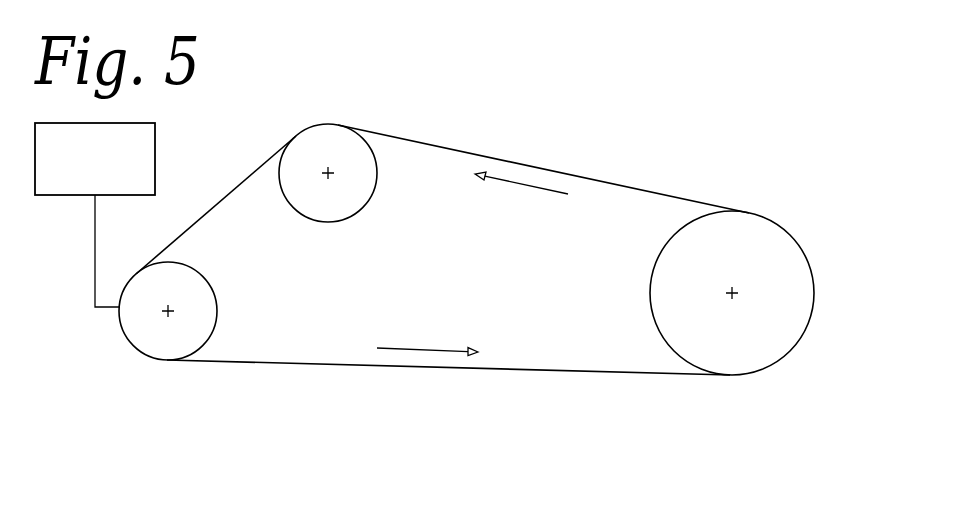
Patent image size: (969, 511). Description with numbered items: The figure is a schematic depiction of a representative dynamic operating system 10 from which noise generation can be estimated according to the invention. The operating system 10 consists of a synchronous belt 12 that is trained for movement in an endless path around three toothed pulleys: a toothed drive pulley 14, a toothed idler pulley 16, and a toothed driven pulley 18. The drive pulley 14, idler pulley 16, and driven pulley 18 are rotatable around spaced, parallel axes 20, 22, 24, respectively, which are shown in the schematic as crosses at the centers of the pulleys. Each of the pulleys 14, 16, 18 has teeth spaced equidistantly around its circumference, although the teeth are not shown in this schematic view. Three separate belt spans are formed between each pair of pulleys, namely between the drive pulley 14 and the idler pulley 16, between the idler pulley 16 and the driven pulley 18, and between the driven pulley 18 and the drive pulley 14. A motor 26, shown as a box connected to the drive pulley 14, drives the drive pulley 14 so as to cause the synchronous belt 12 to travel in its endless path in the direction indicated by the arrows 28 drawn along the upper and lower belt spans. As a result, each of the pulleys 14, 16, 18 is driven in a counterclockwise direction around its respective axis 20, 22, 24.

The operating system 10 is at (607, 124).
The synchronous belt 12 is at (467, 152).
The toothed drive pulley 14 is at (187, 275).
The toothed idler pulley 16 is at (367, 187).
The toothed driven pulley 18 is at (725, 352).
The axis 20 is at (168, 311).
The axis 22 is at (328, 173).
The axis 24 is at (732, 293).
The motor 26 is at (108, 183).
The arrows 28 is at (508, 183).